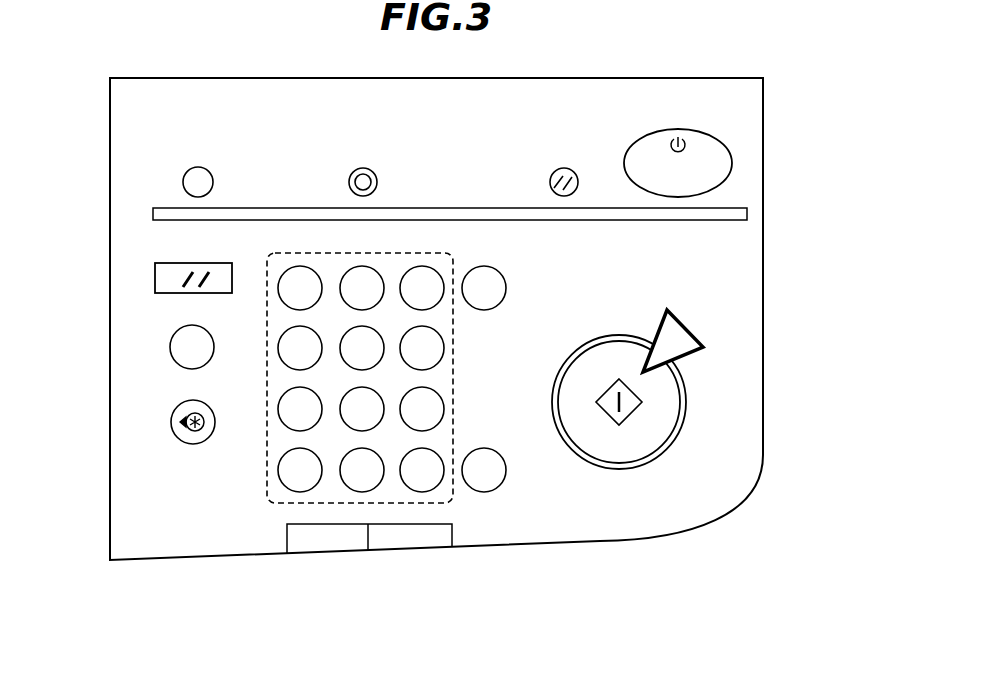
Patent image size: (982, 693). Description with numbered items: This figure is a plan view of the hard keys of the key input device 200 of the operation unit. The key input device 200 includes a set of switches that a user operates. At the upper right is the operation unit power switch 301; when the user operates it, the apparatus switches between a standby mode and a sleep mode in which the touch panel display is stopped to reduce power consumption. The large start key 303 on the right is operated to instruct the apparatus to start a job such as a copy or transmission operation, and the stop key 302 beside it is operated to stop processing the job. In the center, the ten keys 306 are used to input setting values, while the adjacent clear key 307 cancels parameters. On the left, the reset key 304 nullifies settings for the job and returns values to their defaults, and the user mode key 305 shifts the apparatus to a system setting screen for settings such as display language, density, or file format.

The key input device 200 is at (439, 375).
The operation unit power switch 301 is at (733, 160).
The stop key 302 is at (690, 323).
The start key 303 is at (686, 397).
The reset key 304 is at (153, 277).
The user mode key 305 is at (170, 423).
The ten keys 306 is at (268, 503).
The clear key 307 is at (497, 306).